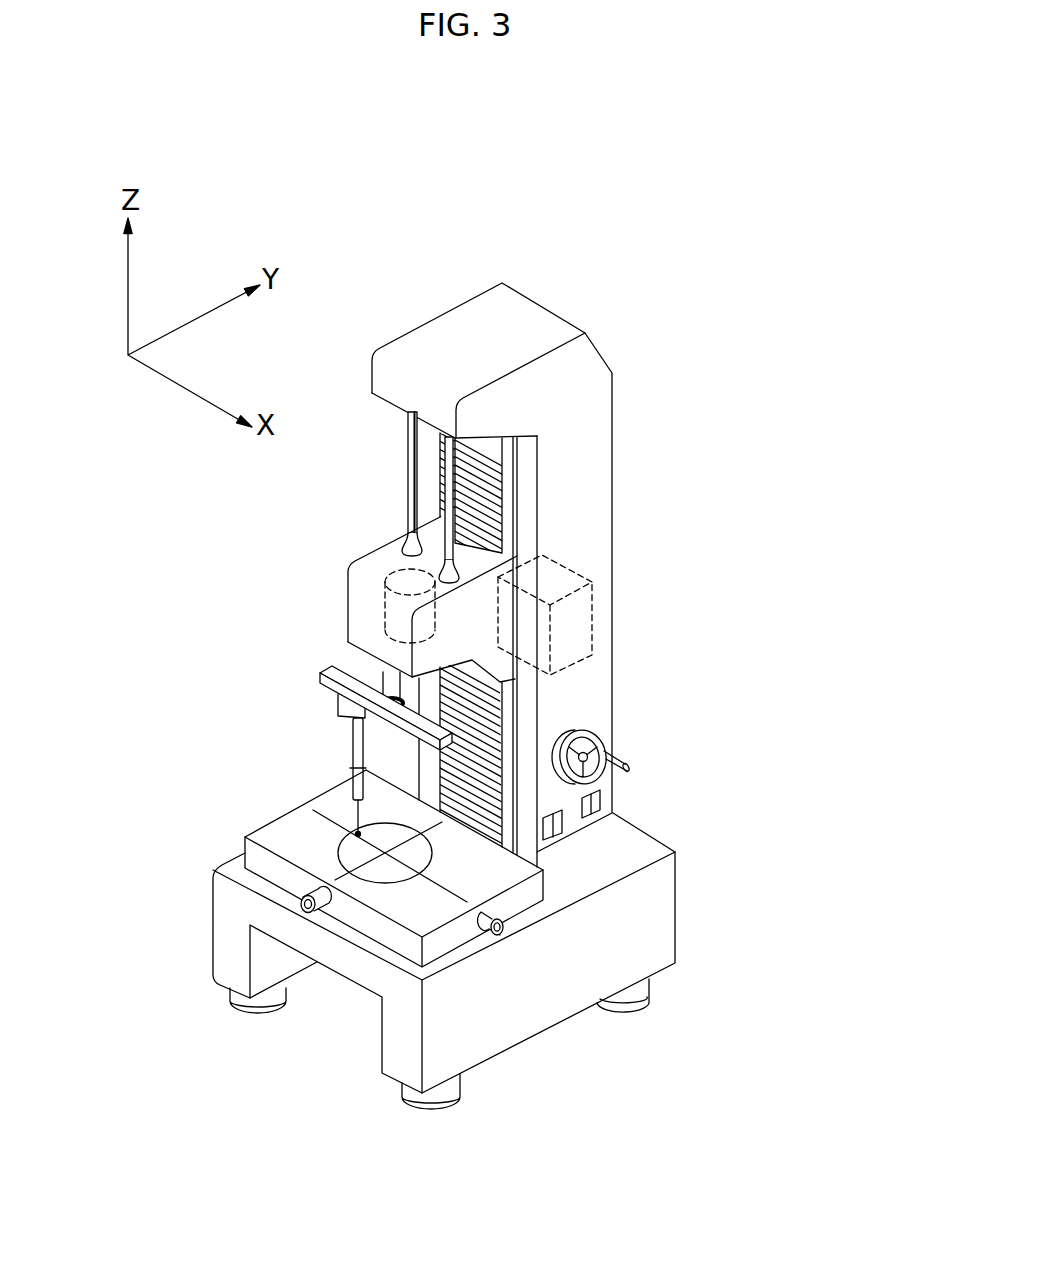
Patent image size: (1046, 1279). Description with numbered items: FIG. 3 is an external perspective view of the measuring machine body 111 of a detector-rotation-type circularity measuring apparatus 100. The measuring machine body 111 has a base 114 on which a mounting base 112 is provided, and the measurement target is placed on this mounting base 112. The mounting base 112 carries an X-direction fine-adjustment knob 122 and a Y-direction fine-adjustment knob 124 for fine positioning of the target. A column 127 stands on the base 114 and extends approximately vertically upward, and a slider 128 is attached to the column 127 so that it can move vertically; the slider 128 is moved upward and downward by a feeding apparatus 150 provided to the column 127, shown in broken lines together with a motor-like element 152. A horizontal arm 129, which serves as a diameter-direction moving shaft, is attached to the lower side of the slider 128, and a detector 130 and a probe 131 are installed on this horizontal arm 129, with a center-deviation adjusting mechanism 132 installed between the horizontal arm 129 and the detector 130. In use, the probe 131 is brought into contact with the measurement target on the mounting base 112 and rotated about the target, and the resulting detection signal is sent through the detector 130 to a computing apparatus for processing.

The circularity measuring apparatus 100 is at (625, 192).
The measuring machine body 111 is at (643, 312).
The mounting base 112 is at (503, 868).
The base 114 is at (277, 913).
The X-direction fine-adjustment knob 122 is at (503, 928).
The Y-direction fine-adjustment knob 124 is at (323, 916).
The column 127 is at (585, 442).
The slider 128 is at (453, 616).
The horizontal arm 129 is at (443, 722).
The detector 130 is at (352, 767).
The probe 131 is at (355, 820).
The center-deviation adjusting mechanism 132 is at (325, 670).
The feeding apparatus 150 is at (580, 628).
The motor 152 is at (386, 606).